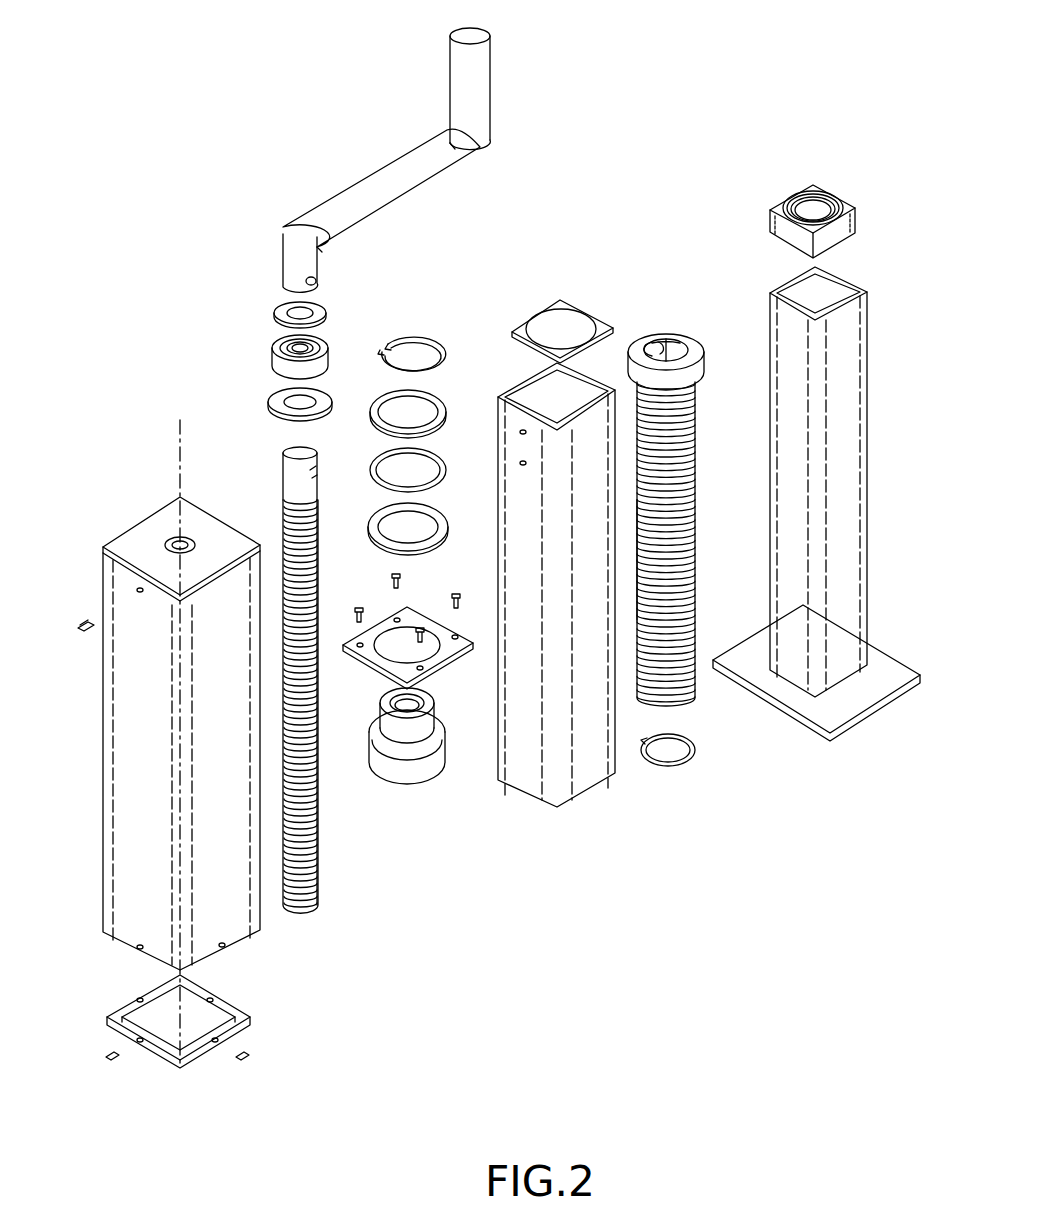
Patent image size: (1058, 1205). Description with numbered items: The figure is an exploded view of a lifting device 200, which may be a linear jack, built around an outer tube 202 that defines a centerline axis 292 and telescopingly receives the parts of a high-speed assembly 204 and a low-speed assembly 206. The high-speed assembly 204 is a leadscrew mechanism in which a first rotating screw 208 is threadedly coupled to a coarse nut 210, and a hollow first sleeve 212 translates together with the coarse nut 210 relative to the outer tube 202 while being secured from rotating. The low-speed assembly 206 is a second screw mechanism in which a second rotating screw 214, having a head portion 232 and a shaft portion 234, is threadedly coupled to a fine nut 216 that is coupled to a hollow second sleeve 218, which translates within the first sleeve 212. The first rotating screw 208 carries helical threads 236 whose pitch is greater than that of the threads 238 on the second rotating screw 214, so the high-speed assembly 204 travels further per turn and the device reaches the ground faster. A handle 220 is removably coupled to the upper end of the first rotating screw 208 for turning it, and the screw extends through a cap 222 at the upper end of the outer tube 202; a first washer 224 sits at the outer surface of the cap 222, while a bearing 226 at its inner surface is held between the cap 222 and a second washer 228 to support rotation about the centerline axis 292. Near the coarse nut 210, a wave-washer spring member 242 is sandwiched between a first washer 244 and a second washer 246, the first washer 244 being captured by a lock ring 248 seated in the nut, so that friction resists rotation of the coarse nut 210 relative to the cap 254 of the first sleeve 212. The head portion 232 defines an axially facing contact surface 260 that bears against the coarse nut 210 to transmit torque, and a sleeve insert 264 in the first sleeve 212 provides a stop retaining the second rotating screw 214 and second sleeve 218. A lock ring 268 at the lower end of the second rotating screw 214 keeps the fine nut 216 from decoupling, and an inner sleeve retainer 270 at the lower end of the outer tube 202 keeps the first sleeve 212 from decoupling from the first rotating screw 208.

The lifting device 200 is at (640, 106).
The outer tube 202 is at (235, 925).
The high-speed assembly 204 is at (625, 1015).
The low-speed assembly 206 is at (635, 869).
The first rotating screw 208 is at (286, 505).
The coarse nut 210 is at (420, 773).
The first sleeve 212 is at (553, 795).
The second rotating screw 214 is at (696, 410).
The fine nut 216 is at (856, 216).
The second sleeve 218 is at (852, 436).
The handle 220 is at (458, 90).
The cap 222 is at (148, 532).
The first washer 224 is at (276, 310).
The bearing 226 is at (273, 352).
The second washer 228 is at (270, 404).
The head portion 232 is at (690, 342).
The shaft portion 234 is at (697, 502).
The threads 236 is at (325, 802).
The threads 238 is at (697, 568).
The spring member 242 is at (445, 462).
The first washer 244 is at (443, 402).
The second washer 246 is at (445, 518).
The lock ring 248 is at (410, 345).
The cap 254 is at (447, 668).
The contact surface 260 is at (668, 335).
The sleeve insert 264 is at (574, 305).
The lock ring 268 is at (697, 752).
The inner sleeve retainer 270 is at (190, 1063).
The centerline axis 292 is at (170, 468).